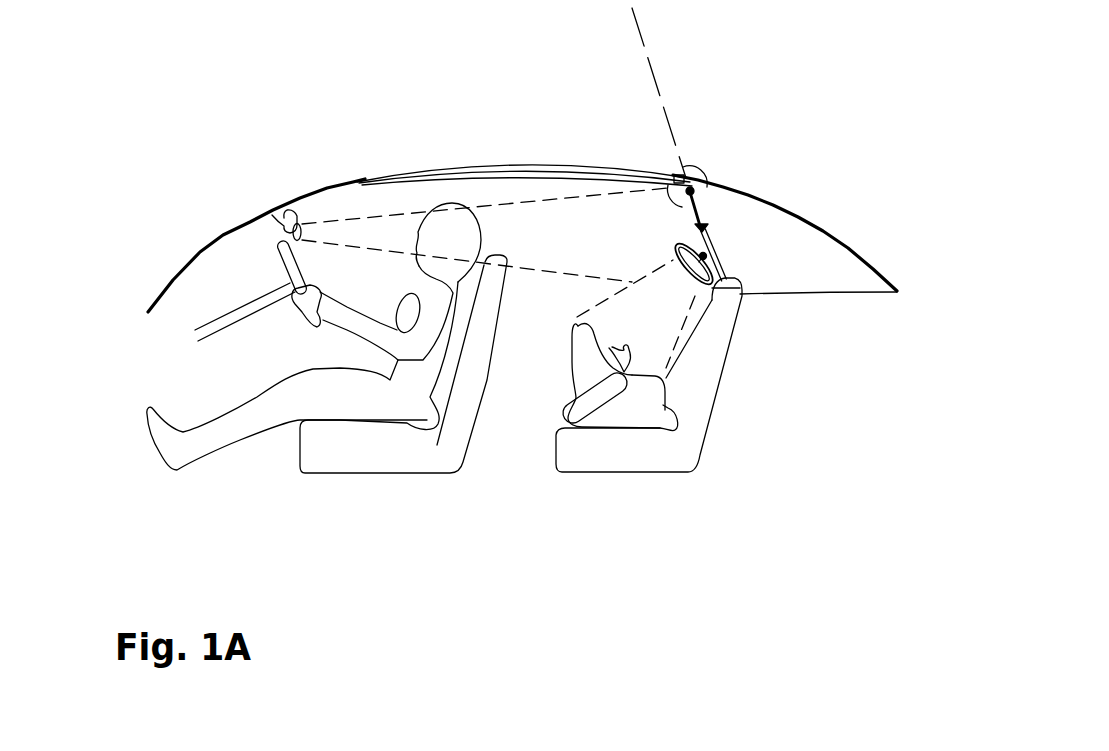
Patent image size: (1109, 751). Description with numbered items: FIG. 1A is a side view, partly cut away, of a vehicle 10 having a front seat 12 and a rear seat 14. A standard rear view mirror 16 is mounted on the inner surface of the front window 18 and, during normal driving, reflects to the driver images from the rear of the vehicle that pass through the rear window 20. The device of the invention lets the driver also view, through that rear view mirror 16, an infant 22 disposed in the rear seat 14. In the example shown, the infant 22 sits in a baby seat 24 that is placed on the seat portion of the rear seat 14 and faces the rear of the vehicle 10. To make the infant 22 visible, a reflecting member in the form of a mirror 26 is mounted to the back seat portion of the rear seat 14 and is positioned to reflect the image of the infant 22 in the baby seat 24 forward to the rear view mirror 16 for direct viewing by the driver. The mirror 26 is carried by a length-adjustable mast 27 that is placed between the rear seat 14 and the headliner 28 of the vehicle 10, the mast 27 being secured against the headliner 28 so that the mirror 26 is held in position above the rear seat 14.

The vehicle 10 is at (263, 237).
The front seat 12 is at (437, 443).
The rear seat 14 is at (667, 453).
The rear view mirror 16 is at (298, 227).
The front window 18 is at (225, 237).
The rear window 20 is at (875, 265).
The infant 22 is at (637, 372).
The baby seat 24 is at (652, 394).
The mirror 26 is at (700, 273).
The length-adjustable mast 27 is at (698, 212).
The headliner 28 is at (675, 173).